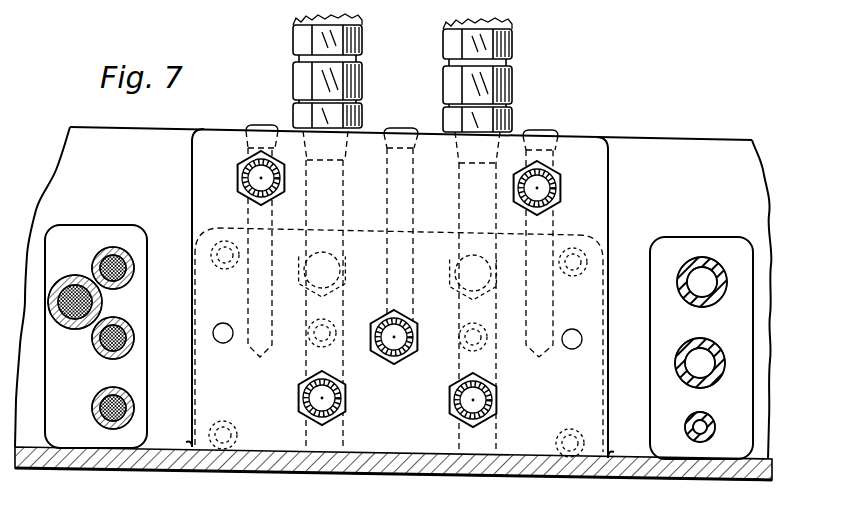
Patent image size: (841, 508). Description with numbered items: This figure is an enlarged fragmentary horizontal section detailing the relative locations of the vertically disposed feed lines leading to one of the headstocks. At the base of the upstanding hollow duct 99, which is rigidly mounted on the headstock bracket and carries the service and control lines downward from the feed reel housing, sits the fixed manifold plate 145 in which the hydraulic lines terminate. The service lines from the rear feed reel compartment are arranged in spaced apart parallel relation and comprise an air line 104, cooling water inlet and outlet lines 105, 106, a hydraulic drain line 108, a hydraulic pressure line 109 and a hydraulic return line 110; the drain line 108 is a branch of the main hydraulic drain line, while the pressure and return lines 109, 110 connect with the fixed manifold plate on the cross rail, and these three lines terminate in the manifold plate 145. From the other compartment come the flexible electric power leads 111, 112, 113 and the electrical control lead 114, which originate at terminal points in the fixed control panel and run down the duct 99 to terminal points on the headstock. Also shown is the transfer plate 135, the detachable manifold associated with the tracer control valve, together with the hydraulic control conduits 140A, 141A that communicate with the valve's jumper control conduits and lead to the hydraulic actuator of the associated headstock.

The duct 99 is at (180, 468).
The air line 104 is at (704, 420).
The cooling water inlet line 105 is at (708, 296).
The cooling water outlet line 106 is at (690, 352).
The hydraulic drain line 108 is at (397, 343).
The hydraulic pressure line 109 is at (465, 408).
The hydraulic return line 110 is at (316, 402).
The electric power lead 111 is at (125, 272).
The electric power lead 112 is at (127, 337).
The electric power lead 113 is at (127, 405).
The electrical control lead 114 is at (74, 318).
The transfer plate 135 is at (562, 232).
The control conduit 140A is at (502, 22).
The control conduit 141A is at (302, 18).
The fixed manifold plate 145 is at (592, 143).